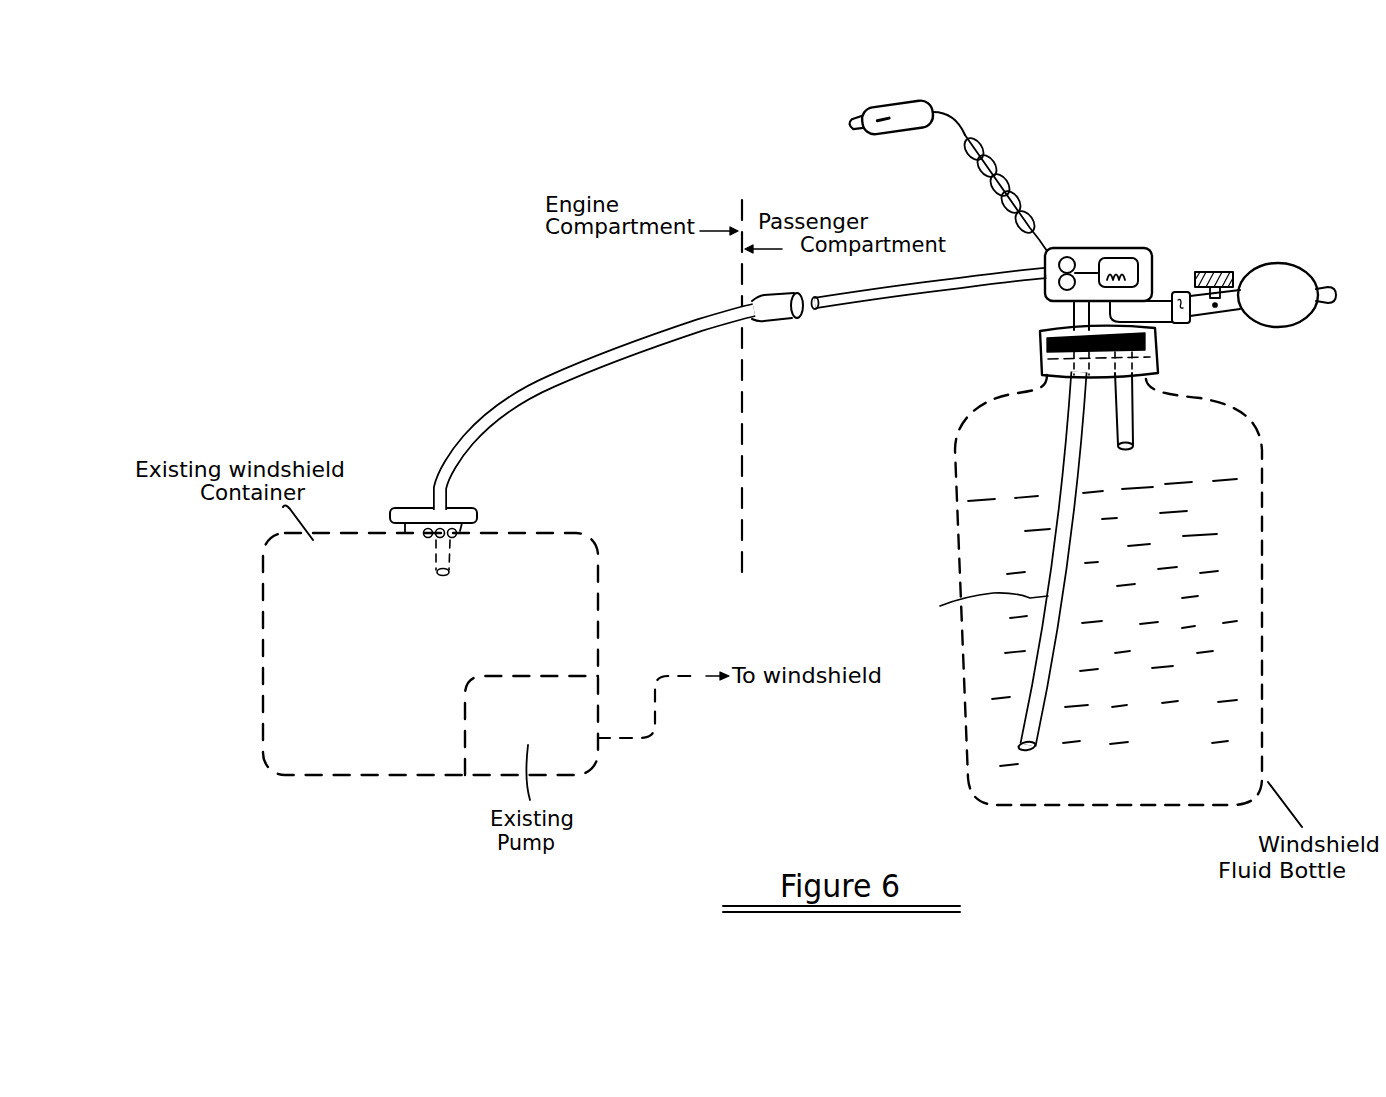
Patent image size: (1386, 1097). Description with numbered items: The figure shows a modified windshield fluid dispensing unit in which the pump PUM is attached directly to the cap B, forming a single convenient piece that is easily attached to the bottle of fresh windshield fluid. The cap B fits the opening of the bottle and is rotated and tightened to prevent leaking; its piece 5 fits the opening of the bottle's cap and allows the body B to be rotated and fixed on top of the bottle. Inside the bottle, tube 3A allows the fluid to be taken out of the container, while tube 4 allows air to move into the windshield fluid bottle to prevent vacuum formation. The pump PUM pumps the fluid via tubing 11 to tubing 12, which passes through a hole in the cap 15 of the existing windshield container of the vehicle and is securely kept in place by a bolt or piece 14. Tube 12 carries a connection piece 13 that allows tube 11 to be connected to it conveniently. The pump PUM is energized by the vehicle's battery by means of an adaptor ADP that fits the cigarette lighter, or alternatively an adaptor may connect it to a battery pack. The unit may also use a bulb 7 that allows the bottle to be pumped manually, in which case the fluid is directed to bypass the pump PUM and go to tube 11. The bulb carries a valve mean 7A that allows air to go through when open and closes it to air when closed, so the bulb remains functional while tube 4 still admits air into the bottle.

The tube 3A is at (1050, 598).
The tube 4 is at (1136, 440).
The piece 5 is at (1160, 340).
The bulb 7 is at (1284, 328).
The valve mean 7A is at (1218, 264).
The tubing 11 is at (974, 289).
The tubing 12 is at (566, 372).
The connection piece 13 is at (775, 321).
The bolt or piece 14 is at (455, 535).
The cap of the existing windshield container 15 is at (409, 507).
The adaptor ADP is at (907, 102).
The pump PUM is at (1140, 248).
The cap B is at (1036, 368).